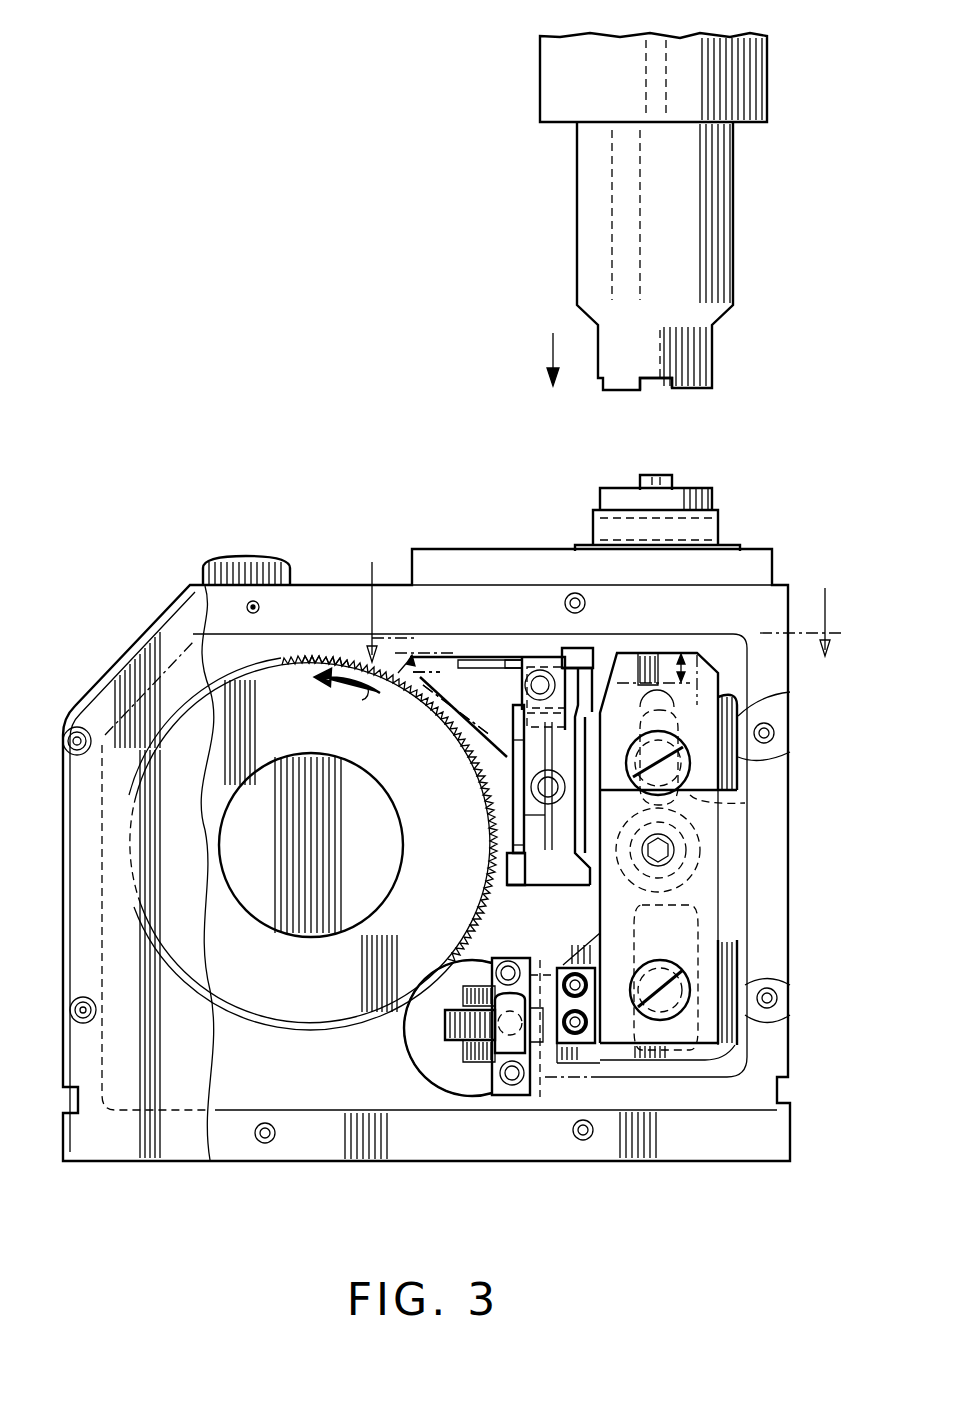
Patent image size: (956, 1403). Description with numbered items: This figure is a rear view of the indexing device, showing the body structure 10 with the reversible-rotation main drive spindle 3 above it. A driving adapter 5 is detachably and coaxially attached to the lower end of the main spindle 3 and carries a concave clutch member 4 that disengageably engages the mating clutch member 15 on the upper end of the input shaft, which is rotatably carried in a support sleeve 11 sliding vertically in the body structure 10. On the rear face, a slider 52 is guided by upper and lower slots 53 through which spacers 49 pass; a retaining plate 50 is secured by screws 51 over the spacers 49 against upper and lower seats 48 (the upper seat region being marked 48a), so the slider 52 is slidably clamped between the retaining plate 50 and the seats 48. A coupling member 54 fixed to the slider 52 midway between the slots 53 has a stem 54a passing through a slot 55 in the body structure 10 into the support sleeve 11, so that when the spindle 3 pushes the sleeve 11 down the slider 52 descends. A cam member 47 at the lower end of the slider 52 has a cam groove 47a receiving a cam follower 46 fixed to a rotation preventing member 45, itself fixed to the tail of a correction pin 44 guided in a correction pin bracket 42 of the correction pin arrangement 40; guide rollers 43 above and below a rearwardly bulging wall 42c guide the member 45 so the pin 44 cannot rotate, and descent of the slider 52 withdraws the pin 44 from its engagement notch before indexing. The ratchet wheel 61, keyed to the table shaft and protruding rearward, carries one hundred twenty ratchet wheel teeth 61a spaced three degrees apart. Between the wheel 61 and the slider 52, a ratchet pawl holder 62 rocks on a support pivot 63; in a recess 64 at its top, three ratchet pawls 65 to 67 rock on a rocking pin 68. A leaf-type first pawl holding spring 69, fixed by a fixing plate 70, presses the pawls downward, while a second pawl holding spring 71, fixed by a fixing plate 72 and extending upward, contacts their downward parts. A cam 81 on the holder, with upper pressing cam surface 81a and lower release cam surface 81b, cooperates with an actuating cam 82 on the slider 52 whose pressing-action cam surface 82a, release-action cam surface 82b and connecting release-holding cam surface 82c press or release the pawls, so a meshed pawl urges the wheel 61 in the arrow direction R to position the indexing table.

The main drive spindle 3 is at (765, 100).
The clutch member 4 is at (640, 388).
The driving adapter 5 is at (733, 290).
The body structure 10 is at (717, 1150).
The support sleeve 11 is at (600, 505).
The clutch member 15 is at (665, 475).
The adjusting mechanism 40 is at (434, 1049).
The correction pin bracket 42 is at (472, 1066).
The bulging wall 42c is at (445, 1022).
The guide rollers 43 is at (480, 966).
The correction pin 44 is at (485, 1090).
The rotation preventing member 45 is at (508, 1057).
The cam follower 46 is at (540, 1062).
The cam member 47 is at (603, 1048).
The cam groove 47a is at (537, 970).
The seats 48 is at (700, 803).
The plate 48a is at (772, 700).
The spacers 49 is at (666, 750).
The retaining plate 50 is at (778, 745).
The screws 51 is at (712, 762).
The slider 52 is at (705, 680).
The slots 53 is at (650, 665).
The coupling member 54 is at (700, 822).
The stem 54a is at (700, 880).
The slot 55 is at (674, 852).
The ratchet wheel 61 is at (297, 673).
The ratchet wheel teeth 61a is at (330, 663).
The ratchet pawl holder 62 is at (513, 742).
The support pivot 63 is at (540, 815).
The recess 64 is at (520, 718).
The ratchet pawl 65 is at (433, 653).
The ratchet pawl 67 is at (456, 710).
The rocking pin 68 is at (535, 676).
The first pawl holding spring 69 is at (490, 653).
The fixing plate 70 is at (563, 655).
The second pawl holding spring 71 is at (538, 787).
The fixing plate 72 is at (507, 870).
The cam 81 is at (577, 776).
The pressing cam surface 81a is at (602, 710).
The release cam surface 81b is at (590, 880).
The actuating cam 82 is at (583, 747).
The pressing-action cam surface 82a is at (578, 650).
The release-action cam surface 82b is at (562, 882).
The release-holding cam surface 82c is at (513, 845).